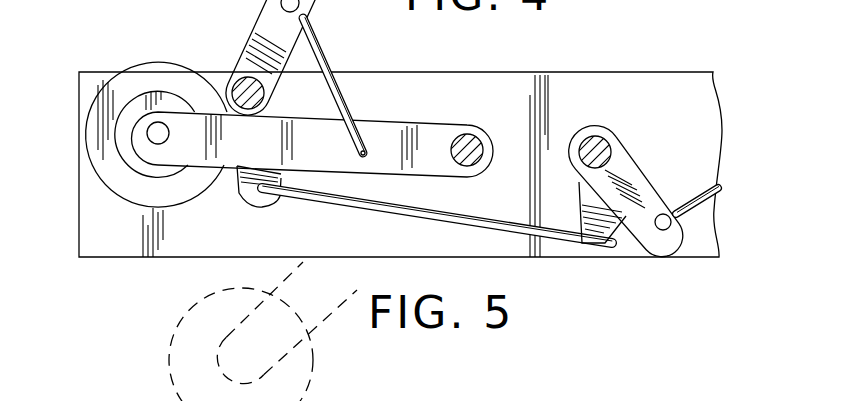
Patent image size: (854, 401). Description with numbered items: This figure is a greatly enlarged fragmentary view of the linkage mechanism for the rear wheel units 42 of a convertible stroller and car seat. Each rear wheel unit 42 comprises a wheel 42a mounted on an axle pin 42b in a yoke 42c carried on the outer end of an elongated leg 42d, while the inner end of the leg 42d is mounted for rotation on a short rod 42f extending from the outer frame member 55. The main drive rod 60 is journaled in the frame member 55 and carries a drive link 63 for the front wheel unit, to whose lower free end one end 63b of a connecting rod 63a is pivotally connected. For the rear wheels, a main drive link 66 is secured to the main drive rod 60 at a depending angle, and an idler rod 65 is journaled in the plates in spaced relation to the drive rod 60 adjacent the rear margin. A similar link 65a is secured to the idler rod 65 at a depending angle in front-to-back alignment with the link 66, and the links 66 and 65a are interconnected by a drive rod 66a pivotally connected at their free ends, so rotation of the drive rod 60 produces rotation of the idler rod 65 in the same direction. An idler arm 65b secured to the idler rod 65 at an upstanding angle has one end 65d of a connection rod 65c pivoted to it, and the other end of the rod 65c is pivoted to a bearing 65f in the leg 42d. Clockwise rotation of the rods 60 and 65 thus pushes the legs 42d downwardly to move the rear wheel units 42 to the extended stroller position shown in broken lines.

The rear wheel unit 42 is at (208, 223).
The wheel 42a is at (96, 107).
The axle pin 42b is at (147, 138).
The yoke 42c is at (170, 157).
The leg 42d is at (402, 125).
The short rod 42f is at (478, 148).
The outer frame member 55 is at (575, 80).
The main drive rod 60 is at (598, 148).
The drive link 63 is at (645, 188).
The connecting rod 63a is at (700, 210).
The end of connecting rod 63b is at (664, 231).
The idler rod 65 is at (233, 70).
The link 65a is at (257, 203).
The idler arm 65b is at (262, 16).
The connection rod 65c is at (328, 60).
The end of connection rod 65d is at (299, 5).
The bearing 65f is at (364, 157).
The main drive link 66 is at (583, 200).
The drive rod 66a is at (490, 236).